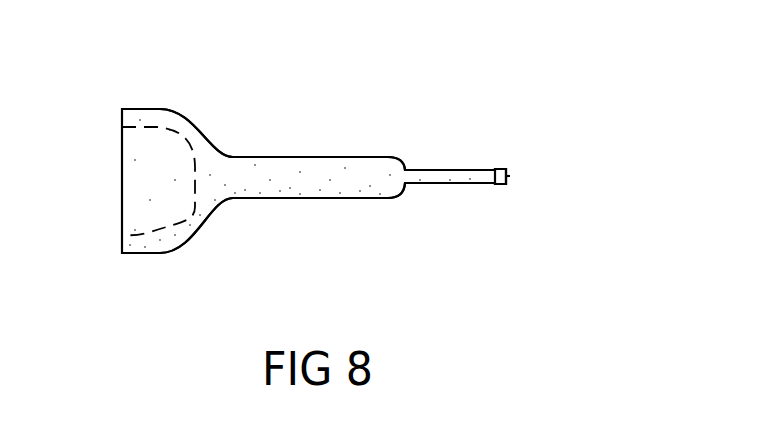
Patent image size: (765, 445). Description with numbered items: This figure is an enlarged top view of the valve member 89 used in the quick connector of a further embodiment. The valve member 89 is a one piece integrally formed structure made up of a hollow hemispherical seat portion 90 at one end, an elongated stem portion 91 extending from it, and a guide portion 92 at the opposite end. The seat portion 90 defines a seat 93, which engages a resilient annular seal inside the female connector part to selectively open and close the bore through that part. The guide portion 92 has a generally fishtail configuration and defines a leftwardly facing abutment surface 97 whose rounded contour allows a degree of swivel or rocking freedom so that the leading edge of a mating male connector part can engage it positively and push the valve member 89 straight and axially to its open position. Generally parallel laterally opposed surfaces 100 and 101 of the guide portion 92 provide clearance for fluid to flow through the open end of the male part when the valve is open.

The valve member 89 is at (258, 242).
The hollow hemispherical seat portion 90 is at (147, 254).
The elongated stem portion 91 is at (297, 167).
The guide portion 92 is at (443, 172).
The seat 93 is at (194, 124).
The abutment surface 97 is at (508, 173).
The laterally opposed surface 100 is at (478, 170).
The laterally opposed surface 101 is at (478, 183).